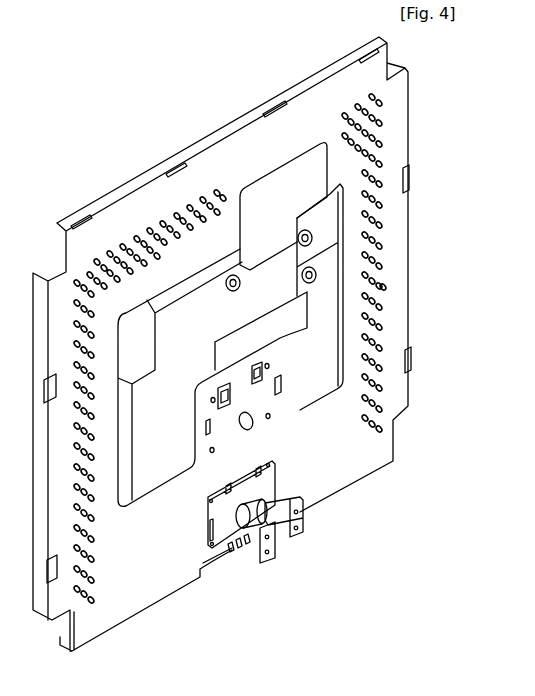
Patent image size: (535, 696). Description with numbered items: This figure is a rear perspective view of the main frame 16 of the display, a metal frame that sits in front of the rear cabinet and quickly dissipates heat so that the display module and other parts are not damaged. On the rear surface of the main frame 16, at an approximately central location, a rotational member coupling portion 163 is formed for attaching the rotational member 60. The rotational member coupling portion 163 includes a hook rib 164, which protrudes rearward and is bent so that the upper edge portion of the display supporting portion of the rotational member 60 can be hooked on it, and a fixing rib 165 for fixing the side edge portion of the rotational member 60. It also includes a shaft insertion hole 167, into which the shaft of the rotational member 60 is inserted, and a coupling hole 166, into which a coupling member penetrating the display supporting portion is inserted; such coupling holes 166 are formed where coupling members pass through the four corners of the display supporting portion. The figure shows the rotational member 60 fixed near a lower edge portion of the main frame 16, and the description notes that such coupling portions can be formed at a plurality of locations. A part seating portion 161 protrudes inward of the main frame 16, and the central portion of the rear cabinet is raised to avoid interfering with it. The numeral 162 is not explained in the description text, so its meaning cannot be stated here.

The main frame 16 is at (424, 142).
The part seating portion 161 is at (332, 267).
The ventilation hole 162 is at (384, 287).
The rotational member coupling portion 163 is at (464, 391).
The hook rib 164 is at (262, 373).
The fixing rib 165 is at (280, 394).
The coupling hole 166 is at (249, 424).
The shaft insertion hole 167 is at (268, 418).
The rotational member 60 is at (294, 554).